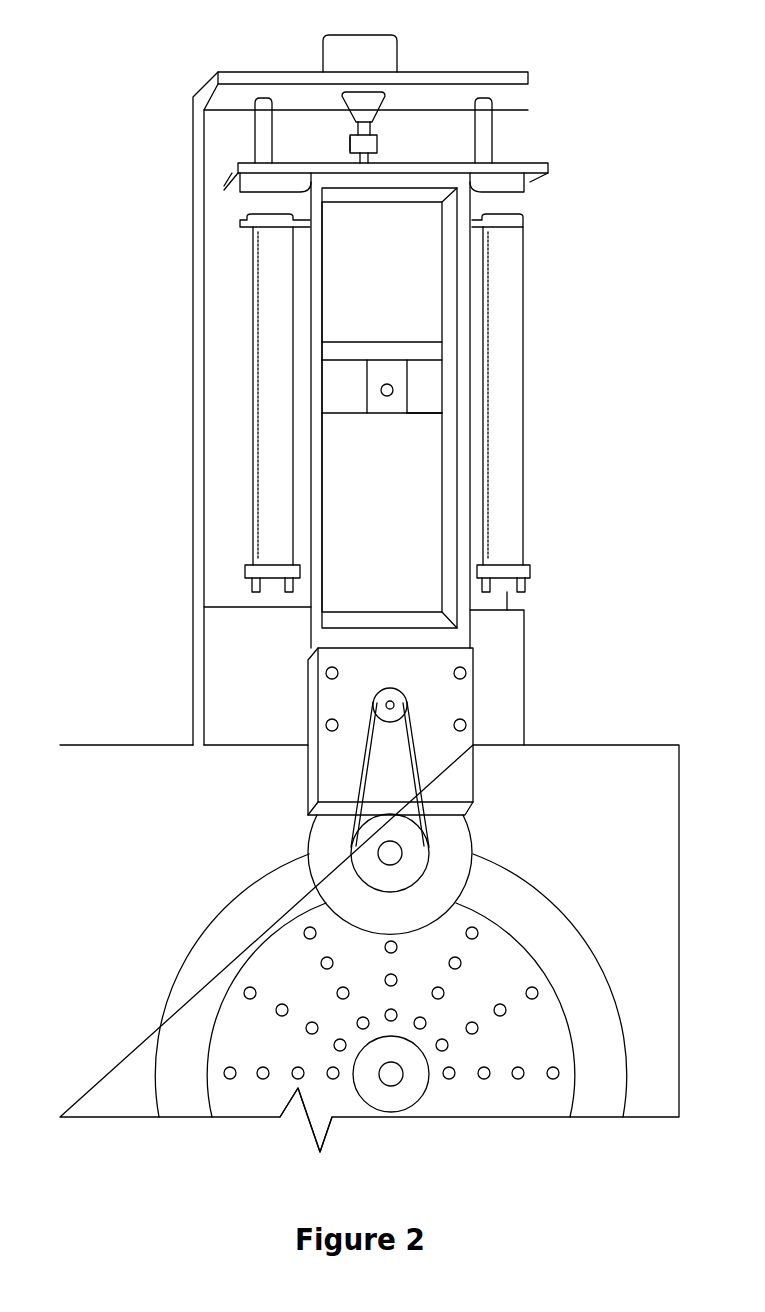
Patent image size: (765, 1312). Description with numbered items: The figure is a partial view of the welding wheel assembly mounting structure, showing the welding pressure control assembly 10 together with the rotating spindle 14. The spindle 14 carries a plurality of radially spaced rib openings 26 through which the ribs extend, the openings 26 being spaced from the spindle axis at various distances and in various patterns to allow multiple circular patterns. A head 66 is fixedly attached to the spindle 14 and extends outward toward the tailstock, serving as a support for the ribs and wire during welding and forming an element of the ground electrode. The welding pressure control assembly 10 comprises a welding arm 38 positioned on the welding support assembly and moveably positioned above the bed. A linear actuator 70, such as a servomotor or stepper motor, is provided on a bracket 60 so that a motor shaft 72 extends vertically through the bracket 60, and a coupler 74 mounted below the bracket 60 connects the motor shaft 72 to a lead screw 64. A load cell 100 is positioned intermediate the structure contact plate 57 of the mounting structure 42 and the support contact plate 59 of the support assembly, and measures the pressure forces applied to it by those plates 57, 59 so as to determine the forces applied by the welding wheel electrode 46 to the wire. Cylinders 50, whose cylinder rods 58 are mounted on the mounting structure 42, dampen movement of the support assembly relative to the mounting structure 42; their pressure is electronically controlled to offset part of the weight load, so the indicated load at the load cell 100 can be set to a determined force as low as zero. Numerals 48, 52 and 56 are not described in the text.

The welding pressure control assembly 10 is at (132, 458).
The spindle 14 is at (502, 1073).
The rib openings 26 is at (283, 1003).
The welding arm 38 is at (398, 847).
The mounting structure 42 is at (223, 378).
The welding wheel electrode 46 is at (463, 853).
The cylinder 48 is at (452, 460).
The cylinders 50 is at (272, 320).
The mounting plate 52 is at (530, 175).
The bracket 56 is at (518, 208).
The structure contact plate 57 is at (415, 357).
The cylinder rods 58 is at (262, 130).
The support contact plate 59 is at (423, 415).
The bracket 60 is at (502, 92).
The lead screw 64 is at (353, 153).
The head 66 is at (408, 1093).
The linear actuator 70 is at (383, 55).
The motor shaft 72 is at (365, 127).
The coupler 74 is at (377, 143).
The load cell 100 is at (400, 382).